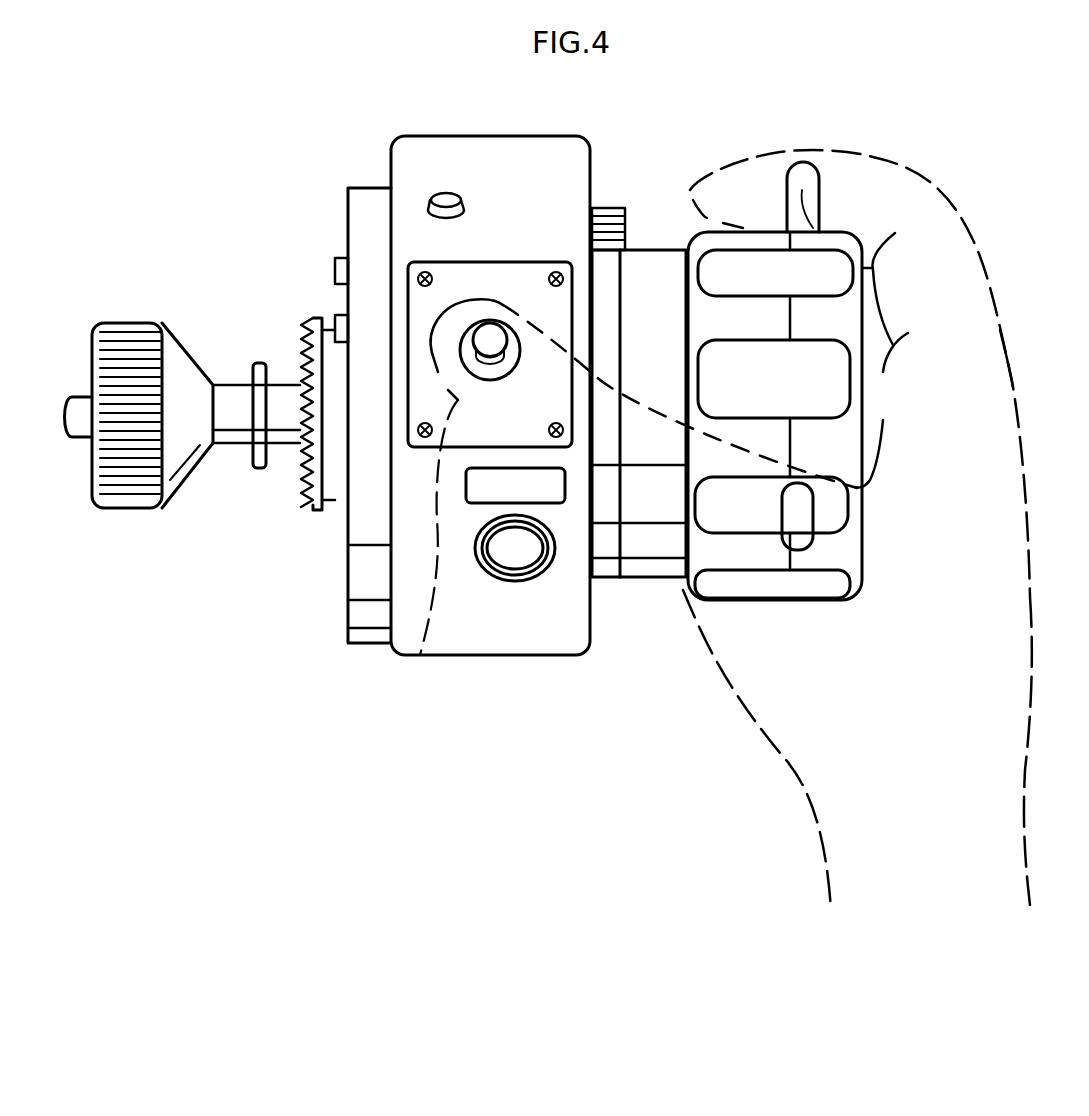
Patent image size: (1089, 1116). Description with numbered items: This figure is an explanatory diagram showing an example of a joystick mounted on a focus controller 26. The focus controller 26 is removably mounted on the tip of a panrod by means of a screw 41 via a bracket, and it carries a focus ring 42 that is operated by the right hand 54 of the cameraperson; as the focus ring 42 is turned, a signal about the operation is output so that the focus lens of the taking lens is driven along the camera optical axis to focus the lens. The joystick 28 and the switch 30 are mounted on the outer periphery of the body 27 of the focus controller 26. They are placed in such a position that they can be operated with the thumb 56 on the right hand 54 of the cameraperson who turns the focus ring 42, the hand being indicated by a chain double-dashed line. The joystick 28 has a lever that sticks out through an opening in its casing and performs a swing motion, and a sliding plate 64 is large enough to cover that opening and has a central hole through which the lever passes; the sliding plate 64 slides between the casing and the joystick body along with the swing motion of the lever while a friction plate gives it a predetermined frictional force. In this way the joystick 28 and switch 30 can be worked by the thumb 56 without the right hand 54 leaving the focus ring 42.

The focus controller 26 is at (678, 168).
The body 27 is at (528, 155).
The joystick 28 is at (490, 340).
The switch 30 is at (513, 553).
The screw 41 is at (130, 355).
The focus ring 42 is at (833, 263).
The right hand 54 is at (1003, 330).
The thumb 56 is at (430, 640).
The sliding plate 64 is at (470, 362).